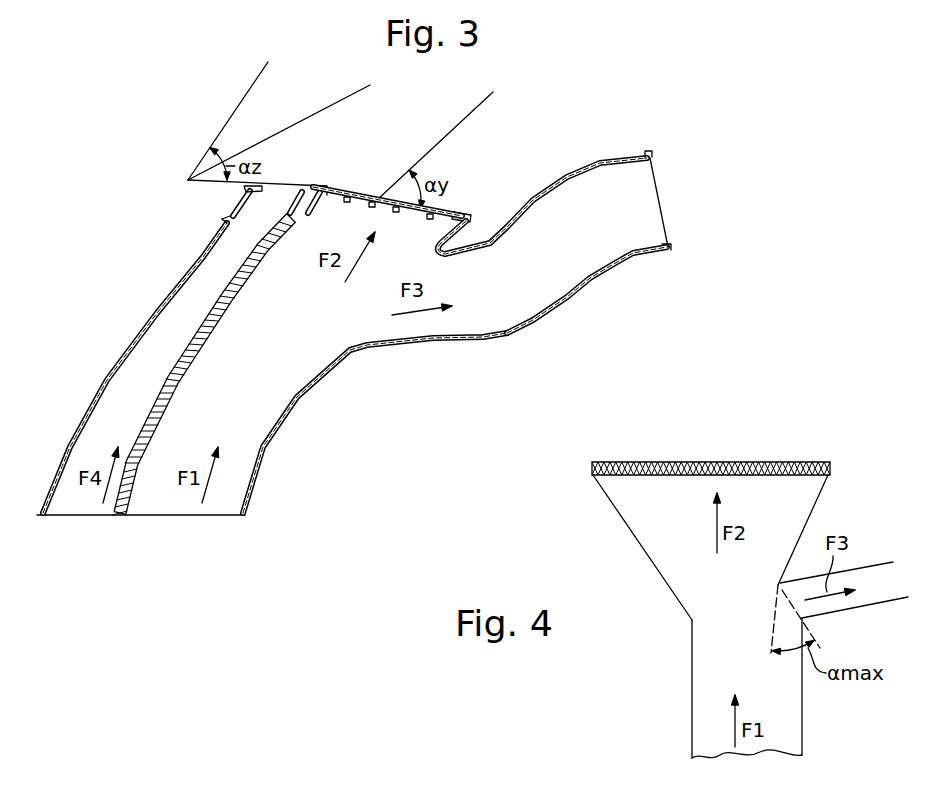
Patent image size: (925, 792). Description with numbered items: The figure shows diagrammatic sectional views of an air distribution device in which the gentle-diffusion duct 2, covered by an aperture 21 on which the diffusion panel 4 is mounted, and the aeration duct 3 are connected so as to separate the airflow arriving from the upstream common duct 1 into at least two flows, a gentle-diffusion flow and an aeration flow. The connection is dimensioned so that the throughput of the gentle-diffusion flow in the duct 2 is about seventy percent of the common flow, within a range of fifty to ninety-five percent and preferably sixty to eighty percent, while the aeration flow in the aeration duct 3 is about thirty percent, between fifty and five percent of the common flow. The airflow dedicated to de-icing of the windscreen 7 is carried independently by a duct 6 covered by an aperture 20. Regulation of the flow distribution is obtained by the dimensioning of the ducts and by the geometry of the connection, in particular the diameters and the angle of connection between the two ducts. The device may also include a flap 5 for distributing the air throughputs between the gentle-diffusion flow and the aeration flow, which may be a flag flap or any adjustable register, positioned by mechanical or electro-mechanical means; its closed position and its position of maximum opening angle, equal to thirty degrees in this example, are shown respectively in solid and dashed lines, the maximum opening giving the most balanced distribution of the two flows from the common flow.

In FIG. 3, the upstream common duct 1 is at (262, 430).
In FIG. 4, the upstream common duct 1 is at (718, 675).
In FIG. 3, the gentle-diffusion duct 2 is at (400, 233).
In FIG. 4, the gentle-diffusion duct 2 is at (637, 517).
In FIG. 3, the aeration duct 3 is at (570, 275).
In FIG. 4, the aeration duct 3 is at (880, 592).
In FIG. 3, the diffusion panel 4 is at (351, 194).
In FIG. 4, the diffusion panel 4 is at (785, 463).
In FIG. 4, the flap 5 is at (777, 608).
In FIG. 3, the duct 6 is at (140, 372).
In FIG. 3, the windscreen 7 is at (303, 119).
In FIG. 3, the aperture 20 is at (303, 184).
In FIG. 3, the aperture 21 is at (325, 186).